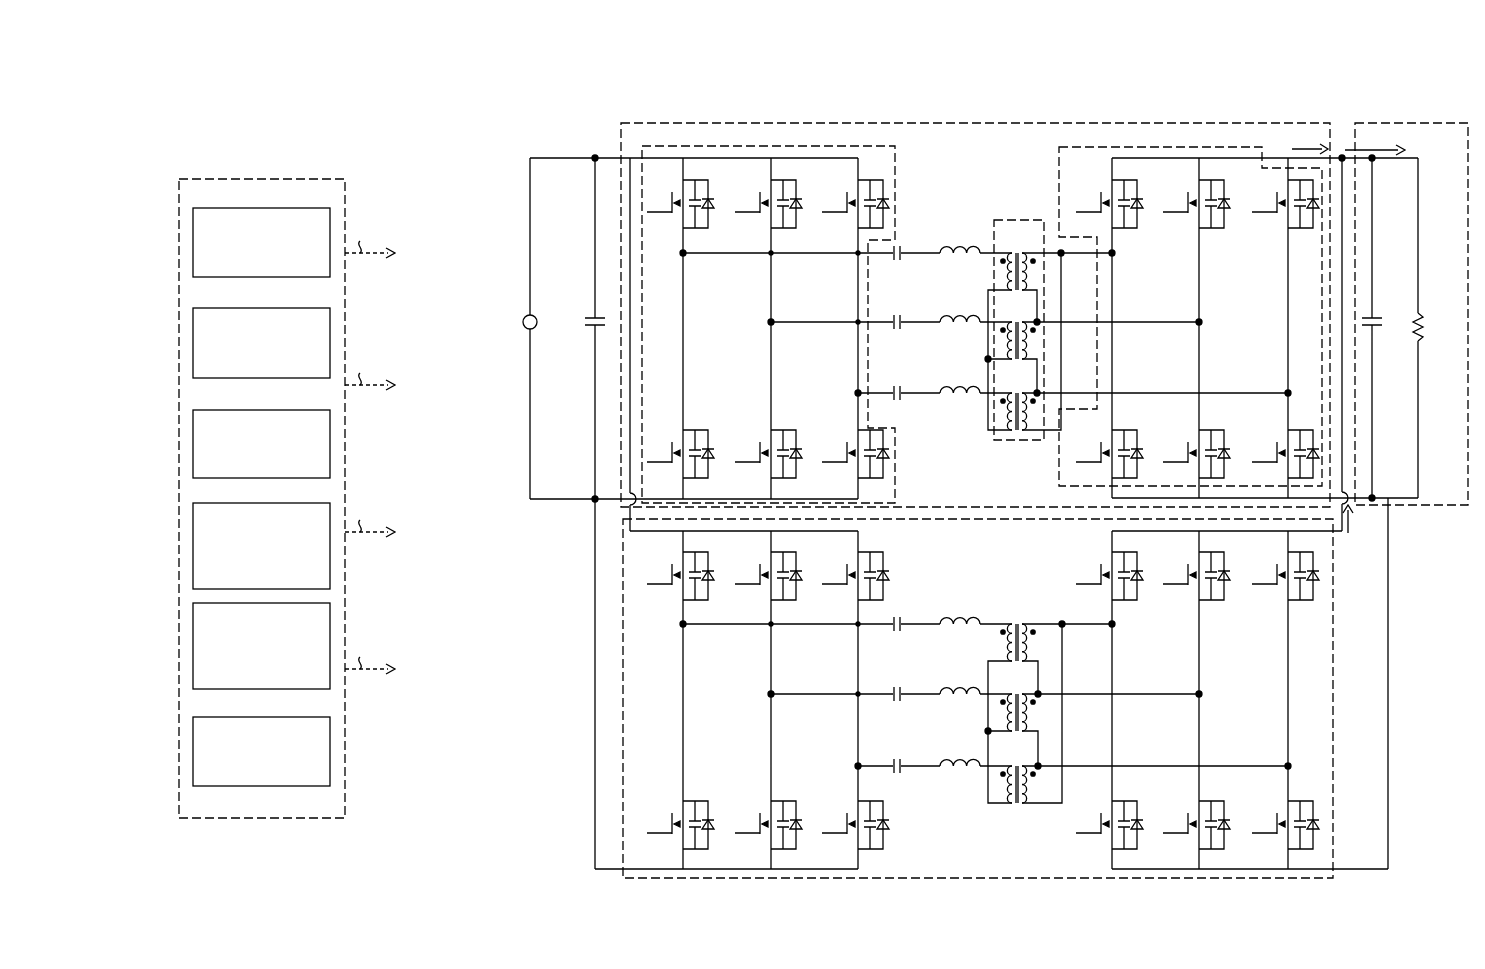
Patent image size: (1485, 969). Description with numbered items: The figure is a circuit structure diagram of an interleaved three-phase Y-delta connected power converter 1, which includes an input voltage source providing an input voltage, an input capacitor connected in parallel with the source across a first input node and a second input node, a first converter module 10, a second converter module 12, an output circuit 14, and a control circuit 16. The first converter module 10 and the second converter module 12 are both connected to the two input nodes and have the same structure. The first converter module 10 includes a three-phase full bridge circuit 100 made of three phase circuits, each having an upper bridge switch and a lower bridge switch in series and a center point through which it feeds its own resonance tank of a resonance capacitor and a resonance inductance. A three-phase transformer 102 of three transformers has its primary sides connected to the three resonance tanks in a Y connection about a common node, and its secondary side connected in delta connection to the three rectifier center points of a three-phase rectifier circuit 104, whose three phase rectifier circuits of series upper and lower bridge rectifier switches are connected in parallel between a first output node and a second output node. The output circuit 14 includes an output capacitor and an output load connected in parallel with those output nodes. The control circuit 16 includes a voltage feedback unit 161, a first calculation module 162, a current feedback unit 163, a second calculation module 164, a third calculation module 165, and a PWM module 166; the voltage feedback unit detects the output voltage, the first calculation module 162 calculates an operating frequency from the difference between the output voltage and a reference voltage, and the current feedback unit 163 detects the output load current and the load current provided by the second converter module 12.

The interleaved three-phase Y-delta connected power converter 1 is at (151, 126).
The first converter module 10 is at (978, 123).
The second converter module 12 is at (1005, 878).
The output circuit 14 is at (1412, 123).
The control circuit 16 is at (262, 179).
The three-phase full bridge circuit 100 is at (730, 146).
The three-phase transformer 102 is at (1012, 220).
The three-phase rectifier circuit 104 is at (1110, 147).
The voltage feedback unit 161 is at (193, 245).
The first calculation module 162 is at (193, 347).
The current feedback unit 163 is at (193, 449).
The second calculation module 164 is at (193, 549).
The third calculation module 165 is at (193, 652).
The pulse width modulation (PWM) module 166 is at (193, 759).